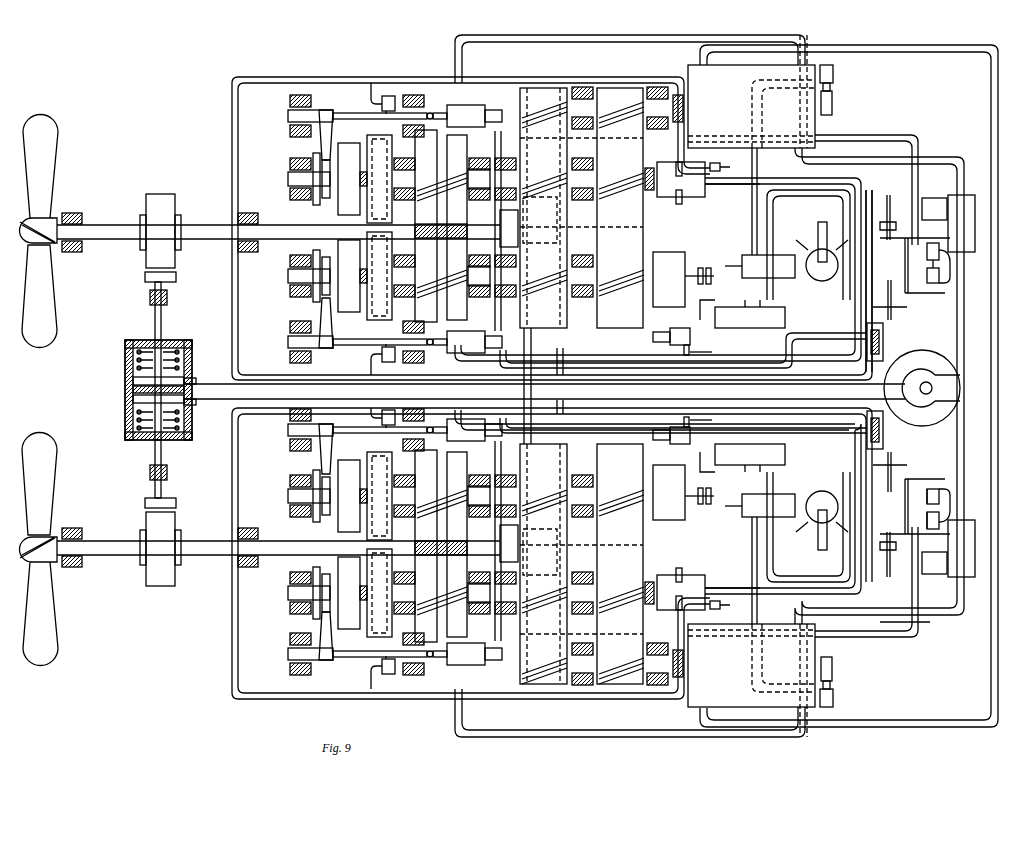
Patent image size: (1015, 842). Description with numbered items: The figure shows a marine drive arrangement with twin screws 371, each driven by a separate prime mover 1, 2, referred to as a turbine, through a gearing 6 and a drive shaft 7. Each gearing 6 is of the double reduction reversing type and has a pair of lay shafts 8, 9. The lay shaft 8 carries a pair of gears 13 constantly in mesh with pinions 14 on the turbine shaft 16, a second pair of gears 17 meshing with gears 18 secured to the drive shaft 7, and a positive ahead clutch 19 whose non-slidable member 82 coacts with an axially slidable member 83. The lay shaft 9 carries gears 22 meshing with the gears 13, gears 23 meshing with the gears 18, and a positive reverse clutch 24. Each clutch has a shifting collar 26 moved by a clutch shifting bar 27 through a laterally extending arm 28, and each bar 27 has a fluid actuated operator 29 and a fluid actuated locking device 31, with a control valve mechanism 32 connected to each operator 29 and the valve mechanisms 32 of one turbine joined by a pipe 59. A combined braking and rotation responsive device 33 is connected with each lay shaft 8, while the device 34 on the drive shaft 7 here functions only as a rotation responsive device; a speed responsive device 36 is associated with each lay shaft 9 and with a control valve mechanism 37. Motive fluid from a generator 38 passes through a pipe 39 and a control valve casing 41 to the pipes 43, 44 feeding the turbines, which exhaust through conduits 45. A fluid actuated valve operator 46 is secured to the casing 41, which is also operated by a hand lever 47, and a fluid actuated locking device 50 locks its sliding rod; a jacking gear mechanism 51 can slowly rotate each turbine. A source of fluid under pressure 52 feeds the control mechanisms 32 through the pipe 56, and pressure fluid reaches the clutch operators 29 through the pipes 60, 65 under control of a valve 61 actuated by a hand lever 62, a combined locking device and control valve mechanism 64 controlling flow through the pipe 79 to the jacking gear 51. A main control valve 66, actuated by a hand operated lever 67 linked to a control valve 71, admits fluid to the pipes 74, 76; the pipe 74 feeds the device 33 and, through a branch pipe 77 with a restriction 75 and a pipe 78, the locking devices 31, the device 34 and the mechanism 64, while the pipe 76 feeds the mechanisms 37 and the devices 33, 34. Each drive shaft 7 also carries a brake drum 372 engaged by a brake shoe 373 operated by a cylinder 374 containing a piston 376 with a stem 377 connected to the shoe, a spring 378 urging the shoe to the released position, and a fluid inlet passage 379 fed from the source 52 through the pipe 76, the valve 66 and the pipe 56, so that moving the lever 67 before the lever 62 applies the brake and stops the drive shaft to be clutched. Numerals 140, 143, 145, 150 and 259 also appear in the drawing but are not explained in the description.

The prime mover 1 is at (751, 145).
The prime mover 2 is at (751, 627).
The gearing 6 is at (490, 378).
The drive shaft 7 is at (278, 388).
The lay shaft 8 is at (288, 495).
The lay shaft 9 is at (288, 592).
The gears 13 is at (583, 388).
The pinions 14 is at (583, 386).
The turbine shaft 16 is at (544, 386).
The gears 17 is at (441, 381).
The gears 18 is at (431, 390).
The positive ahead clutch 19 is at (349, 377).
The gears 22 is at (582, 386).
The gears 23 is at (390, 385).
The positive reverse clutch 24 is at (356, 411).
The shifting collar 26 is at (321, 386).
The clutch shifting bar 27 is at (322, 387).
The laterally extending arm 28 is at (313, 385).
The fluid actuated operator 29 is at (456, 390).
The fluid actuated locking device 31 is at (392, 386).
The control valve mechanism 32 is at (486, 389).
The combined braking and rotation responsive device 33 is at (675, 386).
The rotation responsive device 34 is at (528, 386).
The speed responsive device 36 is at (683, 383).
The control valve mechanism 37 is at (697, 400).
The generator 38 is at (922, 387).
The pipe 39 is at (922, 396).
The control valve casing 41 is at (969, 388).
The pipe 43 is at (879, 382).
The pipe 44 is at (895, 626).
The conduit 45 is at (849, 390).
The fluid actuated valve operator 46 is at (905, 563).
The hand lever 47 is at (907, 386).
The fluid actuated locking device 50 is at (925, 390).
The jacking gear mechanism 51 is at (842, 698).
The source of fluid under pressure 52 is at (671, 385).
The pipe 56 is at (678, 386).
The pipe 59 is at (489, 386).
The pipe 60 is at (617, 218).
The valve 61 is at (822, 386).
The hand lever 62 is at (830, 376).
The fluid actuated locking device and control valve mechanism 64 is at (760, 385).
The pipe 65 is at (638, 553).
The main control valve 66 is at (884, 386).
The hand operated lever 67 is at (887, 395).
The control valve 71 is at (934, 386).
The pipe 74 is at (658, 386).
The restriction 75 is at (729, 386).
The pipe 76 is at (882, 365).
The branch pipe 77 is at (725, 387).
The pipe 78 is at (552, 388).
The pipe 79 is at (732, 398).
The non-slidable clutch member 82 is at (388, 388).
The axially slidable clutch member 83 is at (329, 389).
The solenoid 140 is at (742, 392).
The lead 143 is at (703, 346).
The lead 145 is at (703, 430).
The conduit 150 is at (808, 387).
The conduit 259 is at (866, 388).
The twin screws 371 is at (58, 617).
The brake drum 372 is at (186, 584).
The brake shoe 373 is at (186, 501).
The cylinder 374 is at (152, 391).
The piston 376 is at (133, 401).
The stem 377 is at (172, 458).
The spring 378 is at (137, 422).
The fluid inlet passage 379 is at (202, 387).